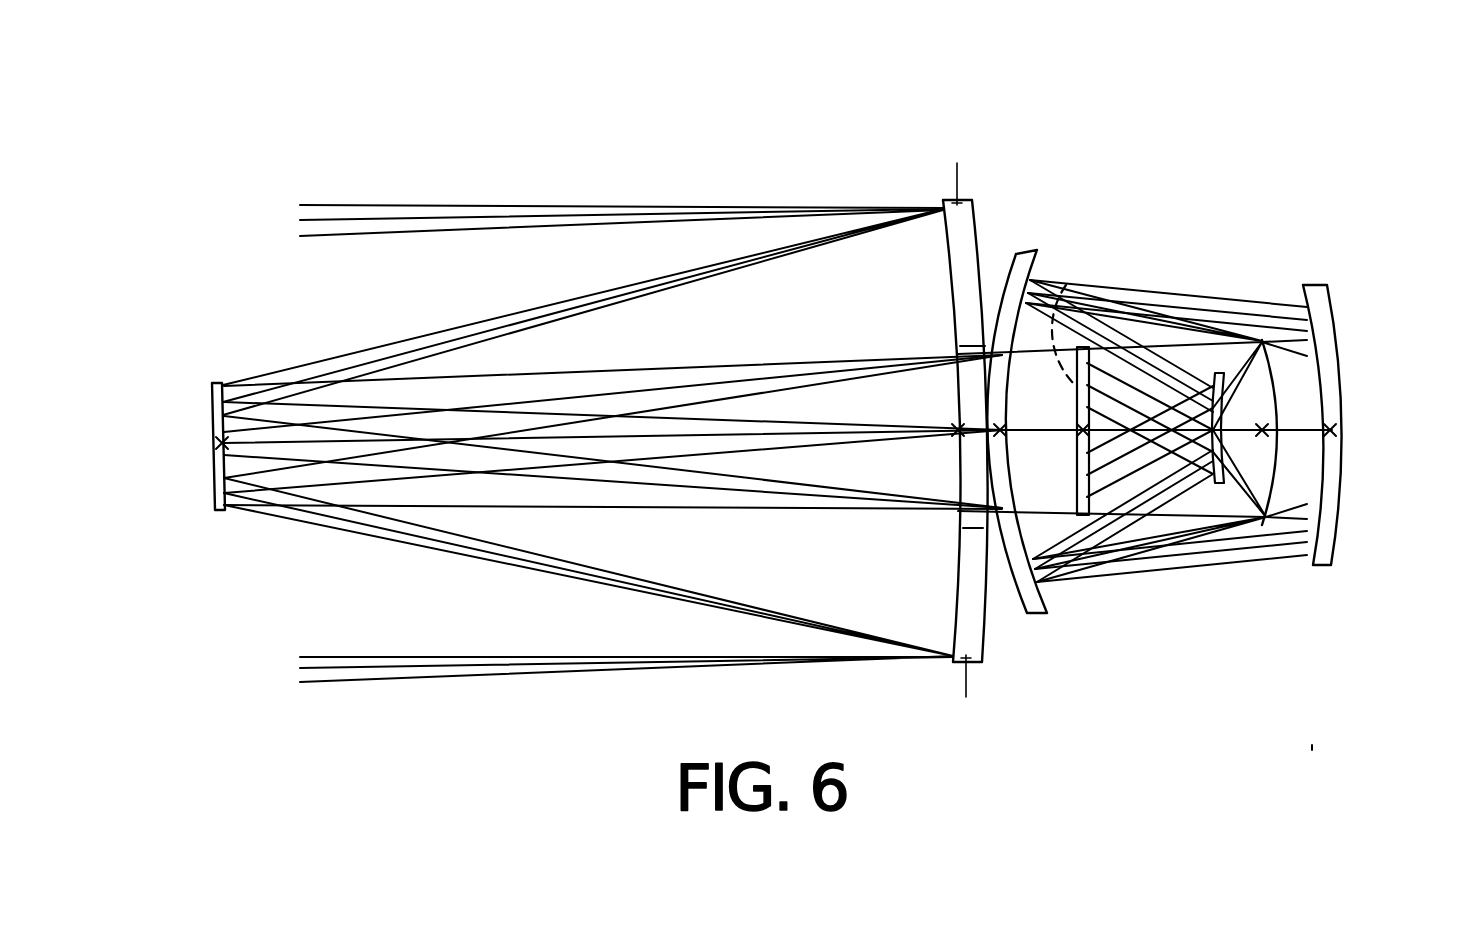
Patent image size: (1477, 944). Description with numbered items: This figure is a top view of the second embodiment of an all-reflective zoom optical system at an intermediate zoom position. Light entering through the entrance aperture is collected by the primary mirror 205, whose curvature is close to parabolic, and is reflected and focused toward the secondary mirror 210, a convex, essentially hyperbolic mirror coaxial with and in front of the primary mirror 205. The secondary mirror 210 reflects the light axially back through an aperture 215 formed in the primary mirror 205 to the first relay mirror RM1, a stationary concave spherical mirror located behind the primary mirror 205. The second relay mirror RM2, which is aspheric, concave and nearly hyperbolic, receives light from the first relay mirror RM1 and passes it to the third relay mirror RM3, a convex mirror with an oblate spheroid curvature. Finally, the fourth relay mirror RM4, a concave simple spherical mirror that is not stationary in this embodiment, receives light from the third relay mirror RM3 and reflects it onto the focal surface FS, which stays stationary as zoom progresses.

The primary mirror 205 is at (983, 642).
The secondary mirror 210 is at (213, 494).
The aperture 215 is at (977, 524).
The first relay mirror RM1 is at (1459, 538).
The second relay mirror RM2 is at (1164, 228).
The third relay mirror RM3 is at (1314, 228).
The fourth relay mirror RM4 is at (1011, 259).
The focal surface FS is at (1233, 530).